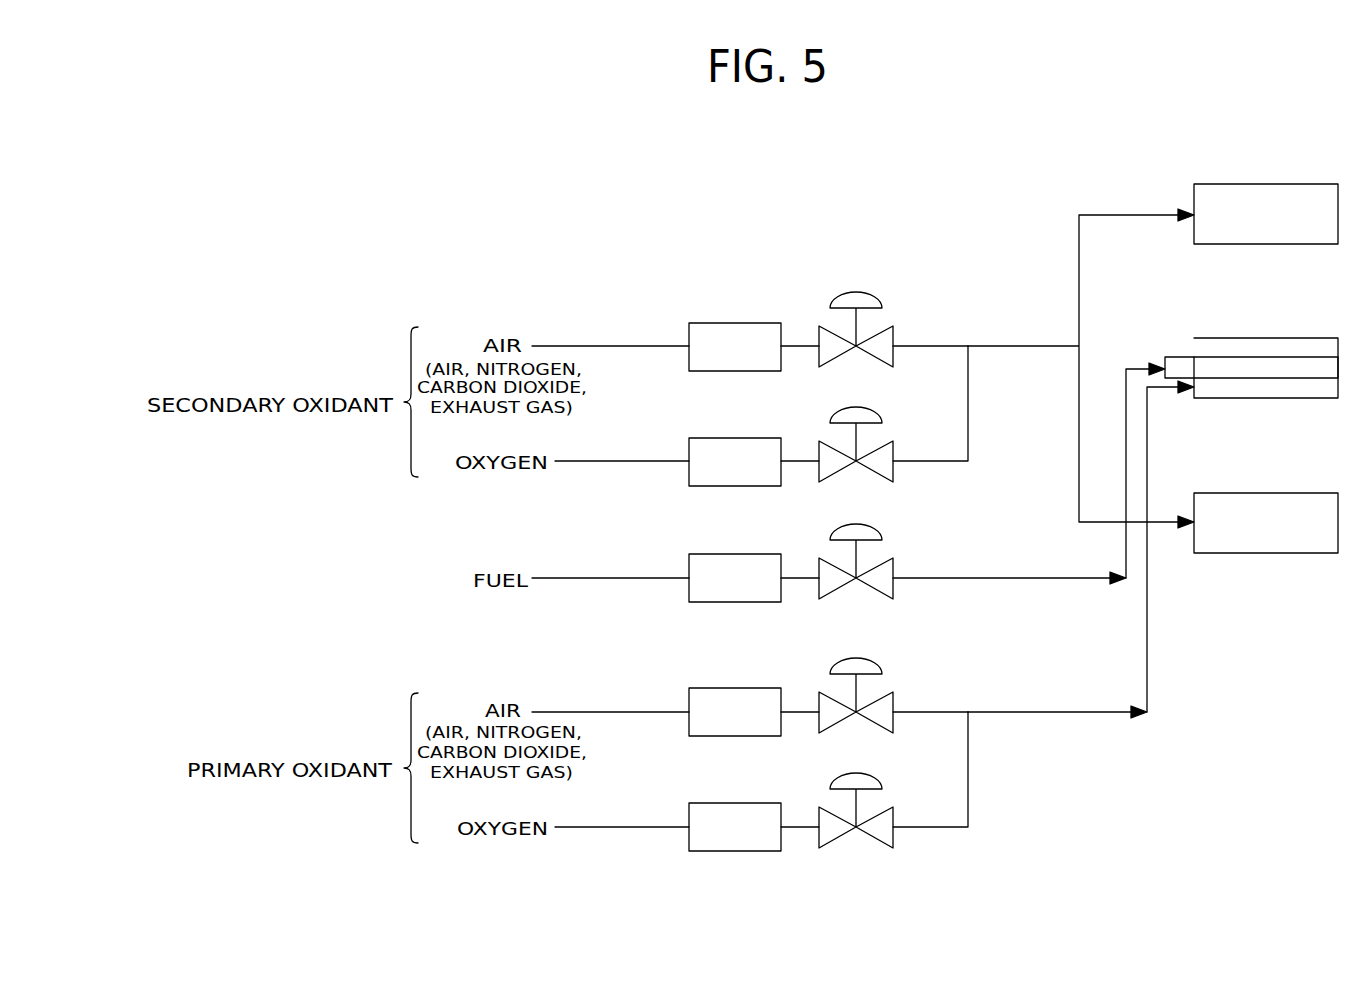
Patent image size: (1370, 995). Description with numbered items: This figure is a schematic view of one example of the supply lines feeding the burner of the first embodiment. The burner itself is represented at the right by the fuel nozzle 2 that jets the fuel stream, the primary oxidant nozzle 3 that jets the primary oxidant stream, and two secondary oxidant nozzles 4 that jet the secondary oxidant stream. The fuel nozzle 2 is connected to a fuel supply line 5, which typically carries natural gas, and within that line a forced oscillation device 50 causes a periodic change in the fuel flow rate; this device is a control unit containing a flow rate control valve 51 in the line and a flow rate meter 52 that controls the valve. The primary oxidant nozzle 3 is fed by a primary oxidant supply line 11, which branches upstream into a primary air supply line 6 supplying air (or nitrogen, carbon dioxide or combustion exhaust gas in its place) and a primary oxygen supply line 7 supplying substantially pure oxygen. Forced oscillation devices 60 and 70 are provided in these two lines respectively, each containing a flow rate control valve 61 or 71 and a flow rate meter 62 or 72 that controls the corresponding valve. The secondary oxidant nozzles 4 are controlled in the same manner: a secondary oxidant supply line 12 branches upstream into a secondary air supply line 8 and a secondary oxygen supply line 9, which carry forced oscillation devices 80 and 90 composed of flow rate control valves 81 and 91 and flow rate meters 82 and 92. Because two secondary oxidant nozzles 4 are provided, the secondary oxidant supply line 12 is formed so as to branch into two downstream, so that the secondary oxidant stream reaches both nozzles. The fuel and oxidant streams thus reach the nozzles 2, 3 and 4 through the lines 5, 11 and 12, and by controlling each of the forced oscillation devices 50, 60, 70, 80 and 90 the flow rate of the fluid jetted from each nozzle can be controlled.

The fuel nozzle 2 is at (1183, 359).
The primary oxidant nozzle 3 is at (1265, 345).
The secondary oxidant nozzles 4 is at (1284, 186).
The fuel supply line 5 is at (1023, 578).
The primary air supply line 6 is at (930, 712).
The primary oxygen supply line 7 is at (930, 827).
The secondary air supply line 8 is at (930, 346).
The secondary oxygen supply line 9 is at (932, 463).
The primary oxidant supply line 11 is at (1047, 712).
The secondary oxidant supply line 12 is at (1025, 346).
The forced oscillation device 50 is at (637, 496).
The flow rate control valve 51 is at (846, 527).
The flow rate meter 52 is at (722, 554).
The forced oscillation device 60 is at (637, 628).
The flow rate control valve 61 is at (846, 661).
The flow rate meter 62 is at (722, 688).
The forced oscillation device 70 is at (637, 752).
The flow rate control valve 71 is at (846, 776).
The flow rate meter 72 is at (722, 803).
The forced oscillation device 80 is at (837, 240).
The flow rate control valve 81 is at (843, 297).
The flow rate meter 82 is at (748, 323).
The forced oscillation device 90 is at (637, 386).
The flow rate control valve 91 is at (846, 412).
The flow rate meter 92 is at (722, 439).